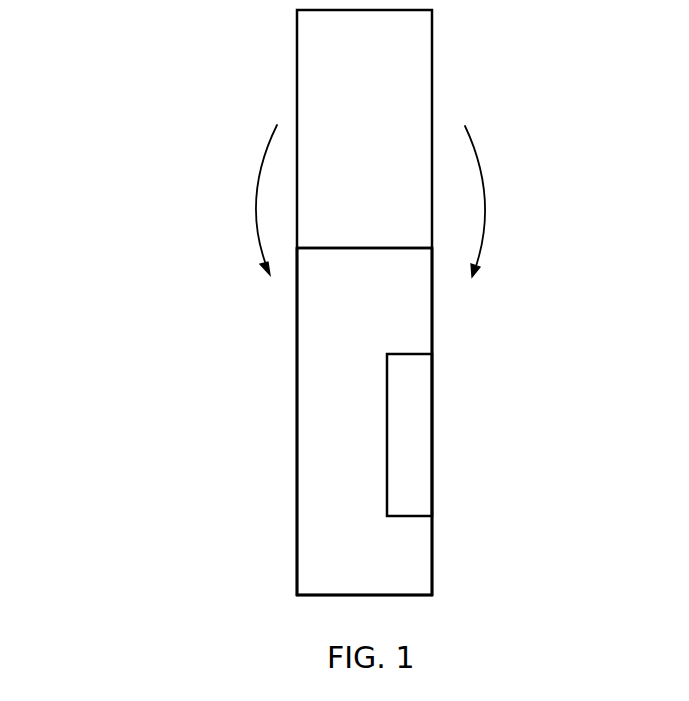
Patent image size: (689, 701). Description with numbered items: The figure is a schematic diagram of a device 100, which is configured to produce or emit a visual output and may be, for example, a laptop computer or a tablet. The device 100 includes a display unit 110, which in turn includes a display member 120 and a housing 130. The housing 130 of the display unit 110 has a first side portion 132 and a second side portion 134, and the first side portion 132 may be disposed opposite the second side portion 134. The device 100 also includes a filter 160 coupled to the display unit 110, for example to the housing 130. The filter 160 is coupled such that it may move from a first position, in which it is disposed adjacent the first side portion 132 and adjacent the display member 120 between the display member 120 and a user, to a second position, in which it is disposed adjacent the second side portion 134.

The device 100 is at (152, 117).
The display unit 110 is at (402, 585).
The display member 120 is at (419, 435).
The housing 130 is at (313, 525).
The first side portion 132 is at (432, 538).
The second side portion 134 is at (297, 336).
The filter 160 is at (398, 81).